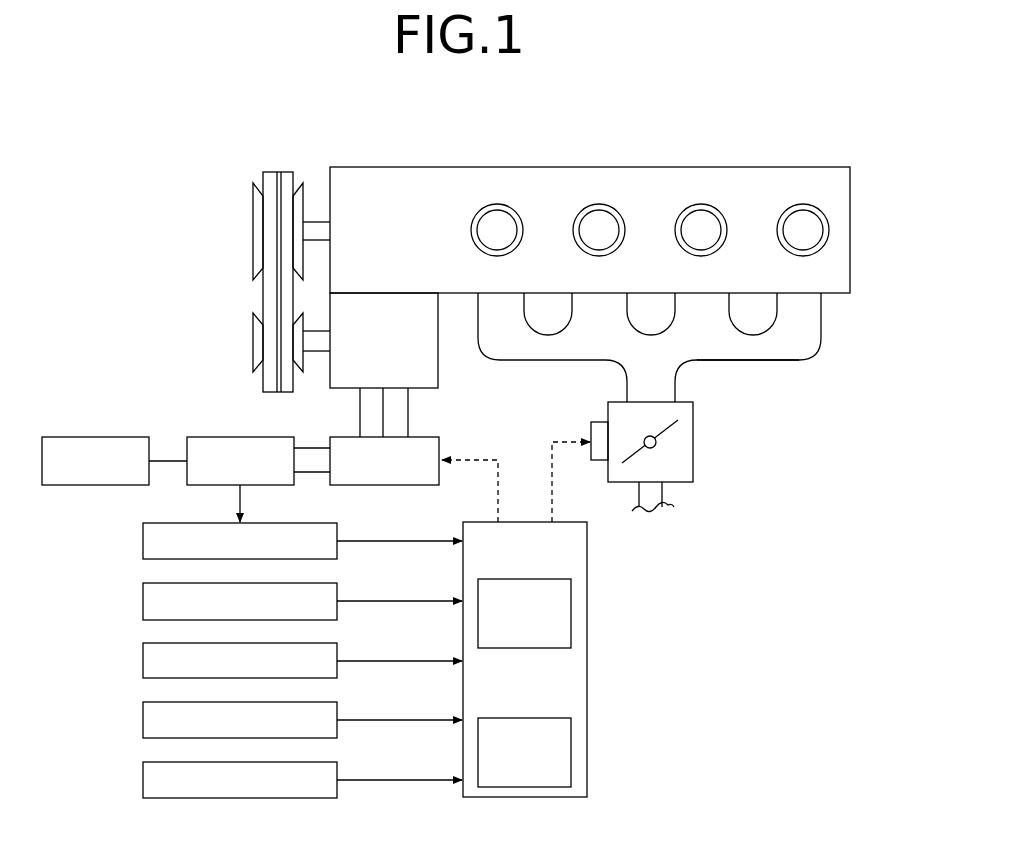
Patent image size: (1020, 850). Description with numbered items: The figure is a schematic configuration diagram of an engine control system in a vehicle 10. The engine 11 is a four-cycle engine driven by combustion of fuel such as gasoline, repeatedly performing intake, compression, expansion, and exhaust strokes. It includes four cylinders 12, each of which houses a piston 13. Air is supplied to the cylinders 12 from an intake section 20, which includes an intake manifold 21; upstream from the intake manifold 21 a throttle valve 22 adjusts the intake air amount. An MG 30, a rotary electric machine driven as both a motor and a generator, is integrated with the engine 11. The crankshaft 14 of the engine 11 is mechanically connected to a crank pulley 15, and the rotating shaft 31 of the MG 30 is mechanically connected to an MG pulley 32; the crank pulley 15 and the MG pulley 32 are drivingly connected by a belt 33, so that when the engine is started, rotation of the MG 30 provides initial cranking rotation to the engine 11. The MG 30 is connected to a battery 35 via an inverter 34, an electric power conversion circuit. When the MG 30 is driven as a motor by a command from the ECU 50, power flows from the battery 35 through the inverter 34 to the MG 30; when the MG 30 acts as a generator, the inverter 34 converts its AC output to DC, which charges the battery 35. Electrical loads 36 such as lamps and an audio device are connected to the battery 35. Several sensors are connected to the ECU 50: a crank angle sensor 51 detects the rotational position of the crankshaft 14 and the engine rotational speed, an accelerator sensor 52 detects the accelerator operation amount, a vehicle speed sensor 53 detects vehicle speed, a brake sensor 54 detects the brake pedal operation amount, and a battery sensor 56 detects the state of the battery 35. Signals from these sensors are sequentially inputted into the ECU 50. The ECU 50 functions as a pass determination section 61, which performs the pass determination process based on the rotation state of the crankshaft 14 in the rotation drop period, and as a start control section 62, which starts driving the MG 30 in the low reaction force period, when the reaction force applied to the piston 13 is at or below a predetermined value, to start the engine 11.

The vehicle 10 is at (828, 138).
The engine 11 is at (592, 167).
The cylinder 12 is at (475, 218).
The piston 13 is at (476, 244).
The crankshaft 14 is at (315, 219).
The crank pulley 15 is at (253, 206).
The intake section 20 is at (821, 313).
The intake manifold 21 is at (759, 361).
The throttle valve 22 is at (693, 425).
The MG (motor generator) 30 is at (438, 380).
The rotating shaft 31 is at (316, 353).
The MG pulley 32 is at (253, 339).
The belt 33 is at (263, 300).
The inverter 34 is at (383, 485).
The battery 35 is at (204, 437).
The electrical loads 36 is at (60, 437).
The ECU 50 is at (587, 580).
The crank angle sensor 51 is at (143, 600).
The accelerator sensor 52 is at (143, 660).
The vehicle speed sensor 53 is at (143, 719).
The brake sensor 54 is at (143, 779).
The battery sensor 56 is at (143, 541).
The pass determination section 61 is at (520, 579).
The start control section 62 is at (520, 718).